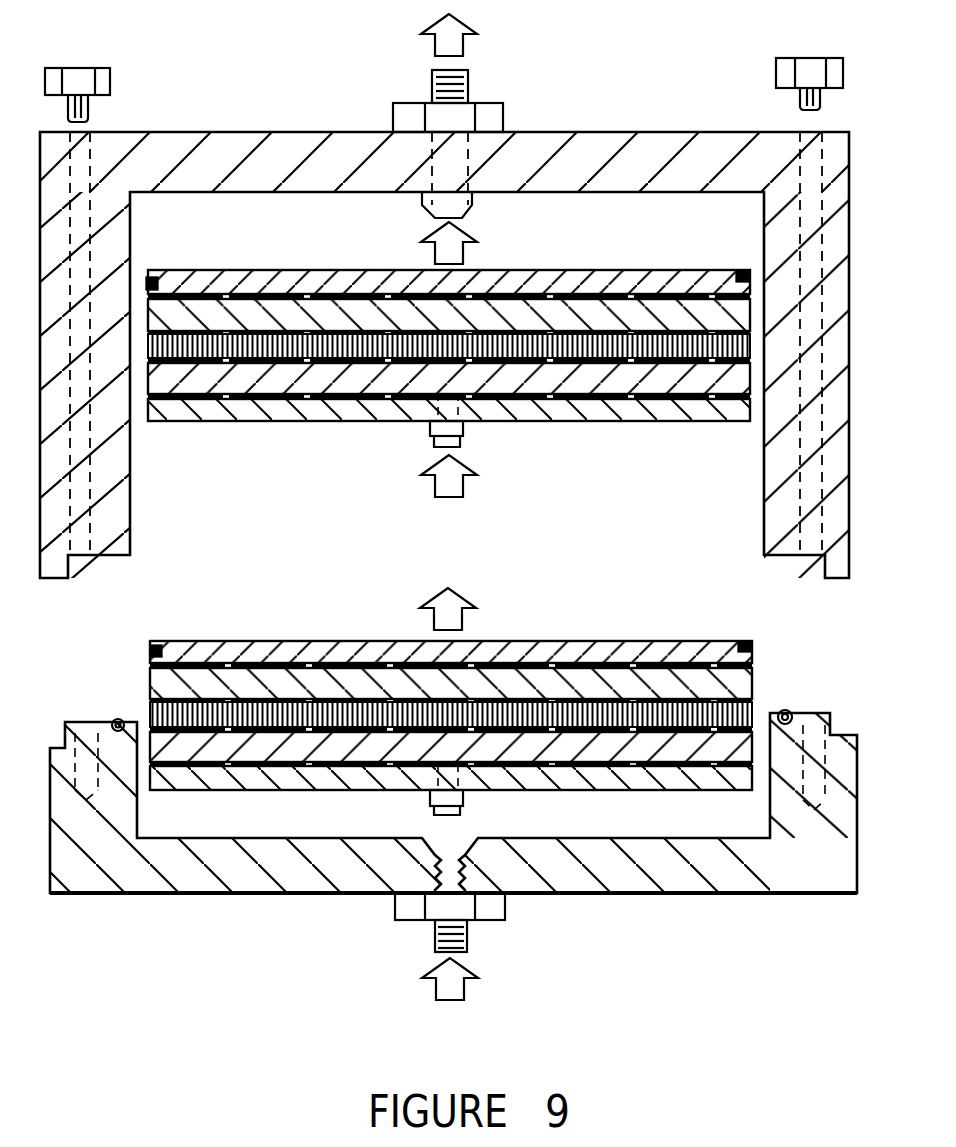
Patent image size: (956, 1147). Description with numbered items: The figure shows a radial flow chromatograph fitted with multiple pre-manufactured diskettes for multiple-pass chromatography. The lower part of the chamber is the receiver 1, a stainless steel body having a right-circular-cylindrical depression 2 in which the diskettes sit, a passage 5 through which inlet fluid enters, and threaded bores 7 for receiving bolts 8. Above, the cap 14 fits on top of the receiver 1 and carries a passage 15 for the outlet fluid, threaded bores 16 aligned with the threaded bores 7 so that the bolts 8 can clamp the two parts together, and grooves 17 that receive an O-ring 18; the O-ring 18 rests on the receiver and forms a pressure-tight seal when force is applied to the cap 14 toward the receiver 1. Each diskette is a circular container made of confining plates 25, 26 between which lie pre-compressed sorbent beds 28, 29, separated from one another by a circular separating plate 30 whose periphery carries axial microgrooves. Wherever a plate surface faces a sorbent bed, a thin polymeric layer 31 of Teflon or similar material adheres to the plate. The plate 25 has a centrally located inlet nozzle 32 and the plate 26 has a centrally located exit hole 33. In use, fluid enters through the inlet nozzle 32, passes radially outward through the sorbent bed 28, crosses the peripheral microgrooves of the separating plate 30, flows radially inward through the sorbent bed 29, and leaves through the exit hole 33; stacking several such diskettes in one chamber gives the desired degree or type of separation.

The receiver 1 is at (605, 870).
The depression 2 is at (190, 822).
The passage 5 is at (437, 930).
The threaded bores 7 is at (72, 760).
The bolts 8 is at (108, 80).
The cap 14 is at (235, 160).
The passage 15 is at (468, 85).
The threaded bores 16 is at (88, 163).
The grooves 17 is at (115, 735).
The O-ring 18 is at (117, 718).
The confining plate 25 is at (333, 408).
The confining plate 26 is at (612, 290).
The sorbent bed 28 is at (196, 385).
The sorbent bed 29 is at (348, 312).
The separating plate 30 is at (443, 340).
The polymeric layer 31 is at (225, 296).
The inlet nozzle 32 is at (465, 428).
The exit hole 33 is at (472, 280).